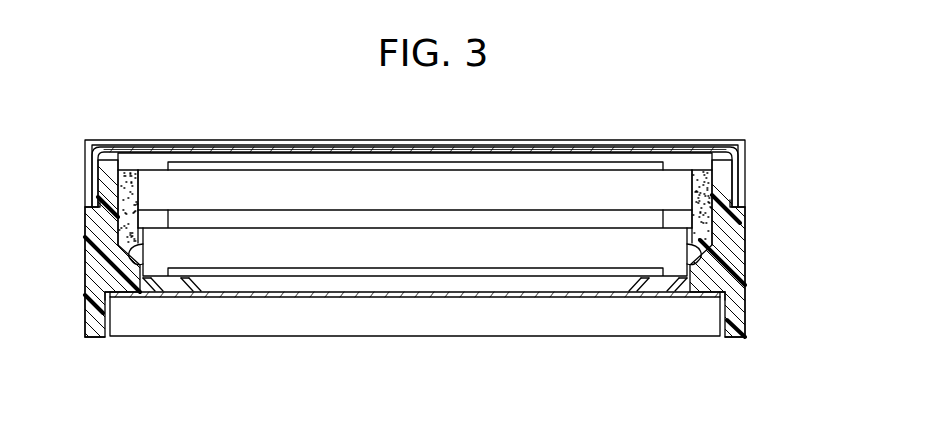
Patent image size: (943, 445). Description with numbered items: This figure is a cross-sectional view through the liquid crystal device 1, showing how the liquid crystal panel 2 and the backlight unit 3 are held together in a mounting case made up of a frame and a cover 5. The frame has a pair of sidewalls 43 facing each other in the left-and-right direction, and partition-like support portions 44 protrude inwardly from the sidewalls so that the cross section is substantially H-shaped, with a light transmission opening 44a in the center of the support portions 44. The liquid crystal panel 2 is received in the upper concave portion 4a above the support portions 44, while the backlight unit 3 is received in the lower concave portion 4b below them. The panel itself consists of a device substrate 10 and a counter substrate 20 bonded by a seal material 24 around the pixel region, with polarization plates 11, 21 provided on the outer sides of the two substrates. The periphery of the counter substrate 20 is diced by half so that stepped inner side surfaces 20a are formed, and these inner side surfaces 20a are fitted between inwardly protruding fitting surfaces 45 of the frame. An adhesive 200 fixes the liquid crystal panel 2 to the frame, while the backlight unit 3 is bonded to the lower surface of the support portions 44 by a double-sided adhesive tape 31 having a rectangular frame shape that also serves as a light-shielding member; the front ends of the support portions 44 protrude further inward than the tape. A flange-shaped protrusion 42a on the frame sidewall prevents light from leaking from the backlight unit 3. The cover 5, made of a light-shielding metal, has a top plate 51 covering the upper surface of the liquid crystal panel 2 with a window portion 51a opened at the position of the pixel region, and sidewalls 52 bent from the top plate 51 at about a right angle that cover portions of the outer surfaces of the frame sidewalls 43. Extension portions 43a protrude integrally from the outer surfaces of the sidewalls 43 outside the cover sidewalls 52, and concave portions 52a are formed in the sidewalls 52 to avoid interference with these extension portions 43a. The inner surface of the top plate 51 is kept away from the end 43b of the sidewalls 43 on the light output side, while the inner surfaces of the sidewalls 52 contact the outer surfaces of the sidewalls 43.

The liquid crystal device 1 is at (203, 113).
The liquid crystal panel 2 is at (251, 163).
The backlight unit 3 is at (545, 315).
The concave portion 4a is at (146, 165).
The concave portion 4b is at (727, 322).
The cover 5 is at (689, 138).
The device substrate 10 is at (302, 185).
The polarization plate 11 is at (432, 168).
The counter substrate 20 is at (395, 255).
The inner side surface 20a is at (147, 252).
The polarization plate 21 is at (468, 270).
The seal material 24 is at (365, 218).
The double-sided adhesive tape 31 is at (162, 305).
The flange-shaped protrusion 42a is at (84, 148).
The sidewall 43 is at (100, 250).
The extension portion 43a is at (92, 230).
The end 43b is at (110, 165).
The support portion 44 is at (205, 283).
The light transmission opening 44a is at (278, 295).
The fitting surface 45 is at (152, 298).
The top plate 51 is at (678, 148).
The window portion 51a is at (632, 148).
The sidewall 52 is at (92, 182).
The concave portion 52a is at (95, 203).
The adhesive 200 is at (128, 188).